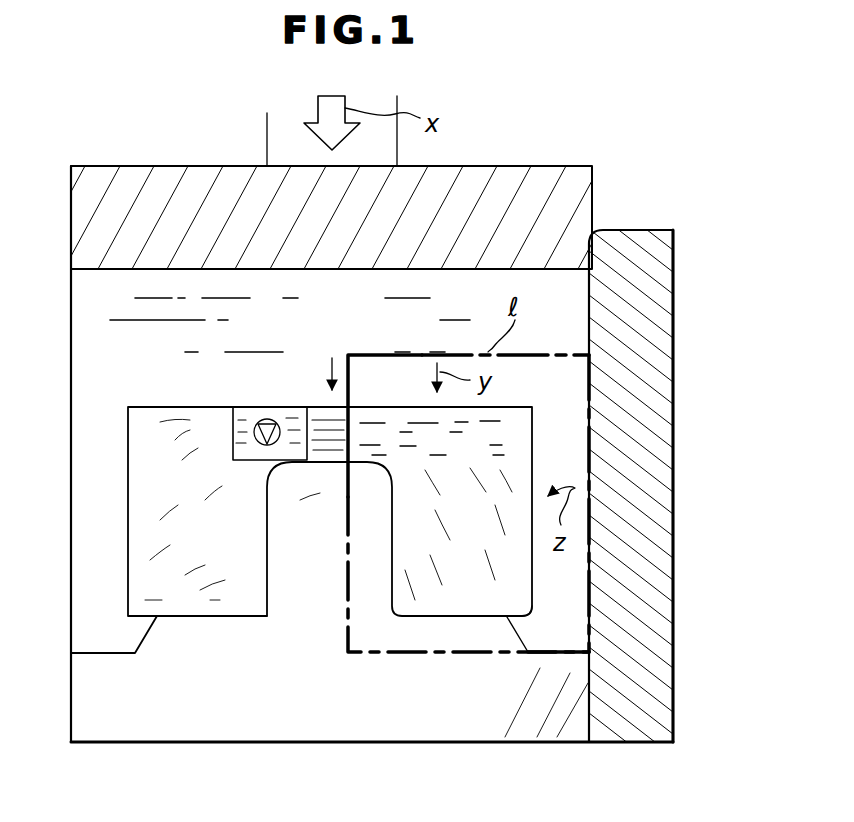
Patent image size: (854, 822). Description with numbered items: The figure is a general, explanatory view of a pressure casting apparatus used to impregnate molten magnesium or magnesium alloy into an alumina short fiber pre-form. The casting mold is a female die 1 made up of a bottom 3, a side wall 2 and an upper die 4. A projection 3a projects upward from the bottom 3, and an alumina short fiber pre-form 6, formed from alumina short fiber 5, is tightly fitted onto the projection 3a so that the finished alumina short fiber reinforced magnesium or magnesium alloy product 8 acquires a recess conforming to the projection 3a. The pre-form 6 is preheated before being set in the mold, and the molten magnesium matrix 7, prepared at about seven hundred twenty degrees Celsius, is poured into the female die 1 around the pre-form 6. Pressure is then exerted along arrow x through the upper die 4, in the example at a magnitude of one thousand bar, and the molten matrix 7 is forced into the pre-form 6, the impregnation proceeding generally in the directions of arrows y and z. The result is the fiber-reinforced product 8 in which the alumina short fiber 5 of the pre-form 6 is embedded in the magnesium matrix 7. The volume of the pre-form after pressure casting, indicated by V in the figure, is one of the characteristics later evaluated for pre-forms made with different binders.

The female die 1 is at (681, 274).
The side wall 2 is at (637, 498).
The bottom 3 is at (315, 715).
The projection 3a is at (212, 620).
The upper die 4 is at (433, 220).
The alumina short fiber 5 is at (522, 563).
The alumina short fiber pre-form 6 is at (541, 619).
The magnesium matrix 7 is at (573, 332).
The alumina short fiber reinforced magnesium or magnesium alloy product 8 is at (523, 430).